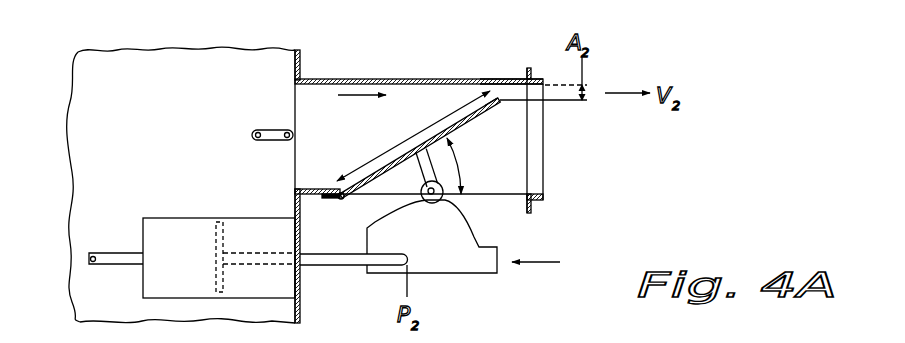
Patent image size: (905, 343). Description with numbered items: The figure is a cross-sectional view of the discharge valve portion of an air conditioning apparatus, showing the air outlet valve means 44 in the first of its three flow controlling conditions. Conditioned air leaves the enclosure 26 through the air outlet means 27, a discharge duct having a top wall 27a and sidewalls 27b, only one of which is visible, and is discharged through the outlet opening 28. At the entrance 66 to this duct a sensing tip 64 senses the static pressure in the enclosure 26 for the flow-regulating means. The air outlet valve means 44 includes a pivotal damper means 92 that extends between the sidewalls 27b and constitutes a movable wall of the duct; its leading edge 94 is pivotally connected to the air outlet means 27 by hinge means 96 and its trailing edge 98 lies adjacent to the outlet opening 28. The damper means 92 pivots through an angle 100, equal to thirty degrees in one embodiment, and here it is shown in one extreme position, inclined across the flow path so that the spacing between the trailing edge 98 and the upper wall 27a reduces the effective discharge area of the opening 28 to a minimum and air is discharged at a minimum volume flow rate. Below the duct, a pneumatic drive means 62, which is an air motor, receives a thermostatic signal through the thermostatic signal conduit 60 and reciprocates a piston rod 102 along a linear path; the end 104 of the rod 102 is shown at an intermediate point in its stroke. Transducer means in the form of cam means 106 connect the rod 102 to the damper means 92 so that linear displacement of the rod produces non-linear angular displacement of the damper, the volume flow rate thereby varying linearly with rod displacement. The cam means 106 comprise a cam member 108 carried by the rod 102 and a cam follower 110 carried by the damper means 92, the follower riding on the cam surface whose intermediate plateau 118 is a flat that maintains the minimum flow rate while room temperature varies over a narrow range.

The enclosure 26 is at (158, 53).
The air outlet means 27 is at (405, 77).
The top wall 27a is at (489, 79).
The sidewalls 27b is at (410, 138).
The outlet opening 28 is at (538, 172).
The air outlet valve means 44 is at (477, 31).
The thermostatic signal conduit 60 is at (122, 250).
The pneumatic drive means 62 is at (191, 216).
The sensing tip 64 is at (271, 130).
The entrance 66 is at (294, 160).
The pivotal damper means 92 is at (462, 124).
The leading edge 94 is at (334, 191).
The hinge means 96 is at (336, 198).
The trailing edge 98 is at (500, 104).
The angle 100 is at (458, 165).
The piston rod 102 is at (316, 262).
The end of the piston rod 104 is at (409, 266).
The cam means 106 is at (552, 262).
The cam member 108 is at (490, 268).
The cam follower 110 is at (427, 200).
The intermediate plateau 118 is at (447, 203).